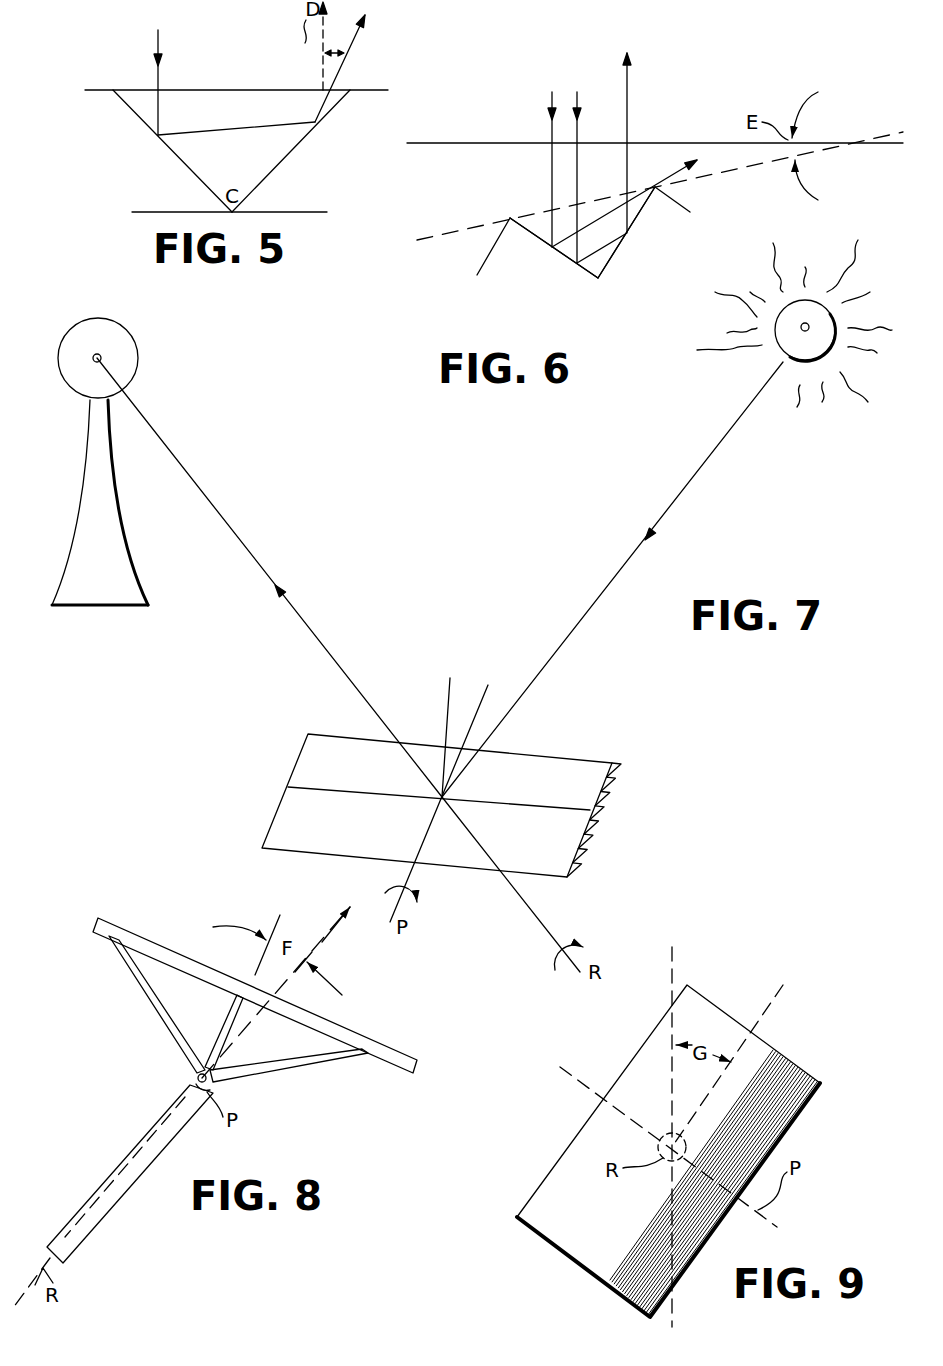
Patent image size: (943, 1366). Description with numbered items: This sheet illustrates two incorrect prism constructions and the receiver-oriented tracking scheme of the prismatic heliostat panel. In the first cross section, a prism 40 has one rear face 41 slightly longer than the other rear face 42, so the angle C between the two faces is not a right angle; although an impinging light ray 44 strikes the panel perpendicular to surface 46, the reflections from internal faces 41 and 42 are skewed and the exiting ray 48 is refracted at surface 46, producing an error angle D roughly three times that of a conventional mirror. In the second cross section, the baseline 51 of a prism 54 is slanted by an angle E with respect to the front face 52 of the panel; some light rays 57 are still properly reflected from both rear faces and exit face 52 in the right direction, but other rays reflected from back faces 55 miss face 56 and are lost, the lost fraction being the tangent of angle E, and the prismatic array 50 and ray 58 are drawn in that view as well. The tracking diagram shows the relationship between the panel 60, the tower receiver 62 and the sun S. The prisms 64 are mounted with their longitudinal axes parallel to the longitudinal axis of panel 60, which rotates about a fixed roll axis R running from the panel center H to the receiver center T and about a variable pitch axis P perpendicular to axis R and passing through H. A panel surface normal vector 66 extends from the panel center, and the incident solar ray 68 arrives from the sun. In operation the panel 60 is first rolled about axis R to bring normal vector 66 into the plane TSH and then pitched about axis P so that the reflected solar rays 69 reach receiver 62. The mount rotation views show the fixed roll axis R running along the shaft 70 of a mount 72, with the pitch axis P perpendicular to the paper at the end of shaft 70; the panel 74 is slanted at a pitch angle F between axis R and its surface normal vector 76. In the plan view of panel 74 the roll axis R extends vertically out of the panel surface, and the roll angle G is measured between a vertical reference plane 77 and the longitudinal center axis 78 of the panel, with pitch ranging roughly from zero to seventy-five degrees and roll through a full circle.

In FIG. 5, the prism 40 is at (138, 175).
In FIG. 5, the rear face 41 is at (132, 113).
In FIG. 5, the rear face 42 is at (300, 143).
In FIG. 5, the impinging light ray 44 is at (162, 80).
In FIG. 5, the surface 46 is at (338, 90).
In FIG. 5, the exiting ray 48 is at (330, 38).
In FIG. 6, the prismatic reflector array 50 is at (470, 265).
In FIG. 6, the baseline 51 is at (458, 222).
In FIG. 6, the front face 52 is at (497, 141).
In FIG. 6, the prism 54 is at (613, 272).
In FIG. 6, the back face 55 is at (528, 237).
In FIG. 6, the face 56 is at (615, 257).
In FIG. 6, the light rays 57 is at (577, 102).
In FIG. 6, the retroreflected ray 58 is at (633, 193).
In FIG. 7, the panel 60 is at (602, 748).
In FIG. 7, the tower receiver 62 is at (138, 372).
In FIG. 7, the prisms 64 is at (617, 773).
In FIG. 7, the panel surface normal vector 66 is at (450, 687).
In FIG. 7, the incident solar ray 68 is at (700, 471).
In FIG. 7, the reflected solar rays 69 is at (253, 553).
In FIG. 8, the shaft 70 is at (125, 1147).
In FIG. 8, the mount 72 is at (145, 1017).
In FIG. 8, the panel 74 is at (368, 1035).
In FIG. 9, the panel 74 is at (803, 1057).
In FIG. 8, the surface normal vector 76 is at (257, 953).
In FIG. 9, the vertical reference plane 77 is at (674, 960).
In FIG. 9, the longitudinal center axis 78 is at (793, 987).